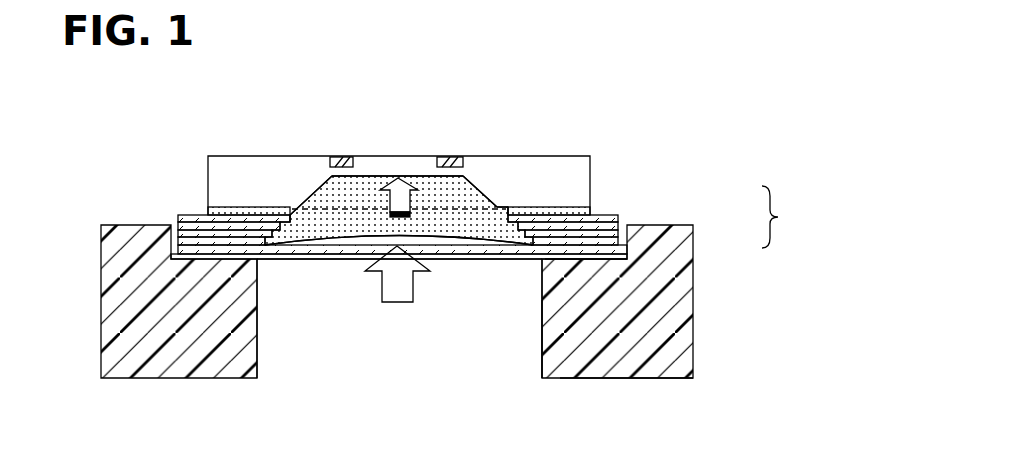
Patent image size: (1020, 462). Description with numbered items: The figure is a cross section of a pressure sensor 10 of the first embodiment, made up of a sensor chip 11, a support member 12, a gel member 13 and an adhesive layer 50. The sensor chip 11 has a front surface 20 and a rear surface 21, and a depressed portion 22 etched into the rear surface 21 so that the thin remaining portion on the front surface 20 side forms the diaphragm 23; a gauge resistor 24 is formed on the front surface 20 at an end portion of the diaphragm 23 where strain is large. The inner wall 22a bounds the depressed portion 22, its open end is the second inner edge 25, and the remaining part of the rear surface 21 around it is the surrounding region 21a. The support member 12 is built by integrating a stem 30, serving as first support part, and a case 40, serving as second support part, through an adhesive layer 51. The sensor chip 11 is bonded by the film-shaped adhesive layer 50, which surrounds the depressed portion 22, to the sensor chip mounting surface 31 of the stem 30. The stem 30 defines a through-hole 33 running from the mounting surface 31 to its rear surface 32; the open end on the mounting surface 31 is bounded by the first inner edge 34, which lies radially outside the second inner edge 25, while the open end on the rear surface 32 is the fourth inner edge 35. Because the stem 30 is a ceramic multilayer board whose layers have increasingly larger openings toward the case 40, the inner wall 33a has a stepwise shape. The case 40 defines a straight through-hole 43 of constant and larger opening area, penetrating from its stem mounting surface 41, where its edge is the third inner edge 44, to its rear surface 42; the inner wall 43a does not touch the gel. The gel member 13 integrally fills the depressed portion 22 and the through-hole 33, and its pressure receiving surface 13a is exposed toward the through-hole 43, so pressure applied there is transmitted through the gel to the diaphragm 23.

The pressure sensor 10 is at (455, 261).
The sensor chip 11 is at (434, 166).
The support member 12 is at (786, 217).
The gel member 13 is at (399, 247).
The pressure receiving surface 13a is at (341, 245).
The front surface 20 is at (434, 158).
The rear surface 21 is at (239, 210).
The surrounding region 21a is at (506, 221).
The depressed portion 22 is at (472, 192).
The inner wall 22a is at (505, 205).
The diaphragm 23 is at (398, 172).
The gauge resistor 24 is at (450, 160).
The second inner edge 25 is at (302, 207).
The stem 30 is at (632, 212).
The sensor chip mounting surface 31 is at (601, 215).
The rear surface 32 is at (188, 248).
The through-hole 33 is at (437, 254).
The inner wall 33a is at (498, 206).
The first inner edge 34 is at (292, 213).
The fourth inner edge 35 is at (262, 258).
The case 40 is at (693, 240).
The stem mounting surface 41 is at (577, 261).
The rear surface 42 is at (623, 379).
The through-hole 43 is at (392, 353).
The inner wall 43a is at (542, 327).
The third inner edge 44 is at (538, 260).
The adhesive layer 50 is at (204, 183).
The adhesive layer 51 is at (174, 229).